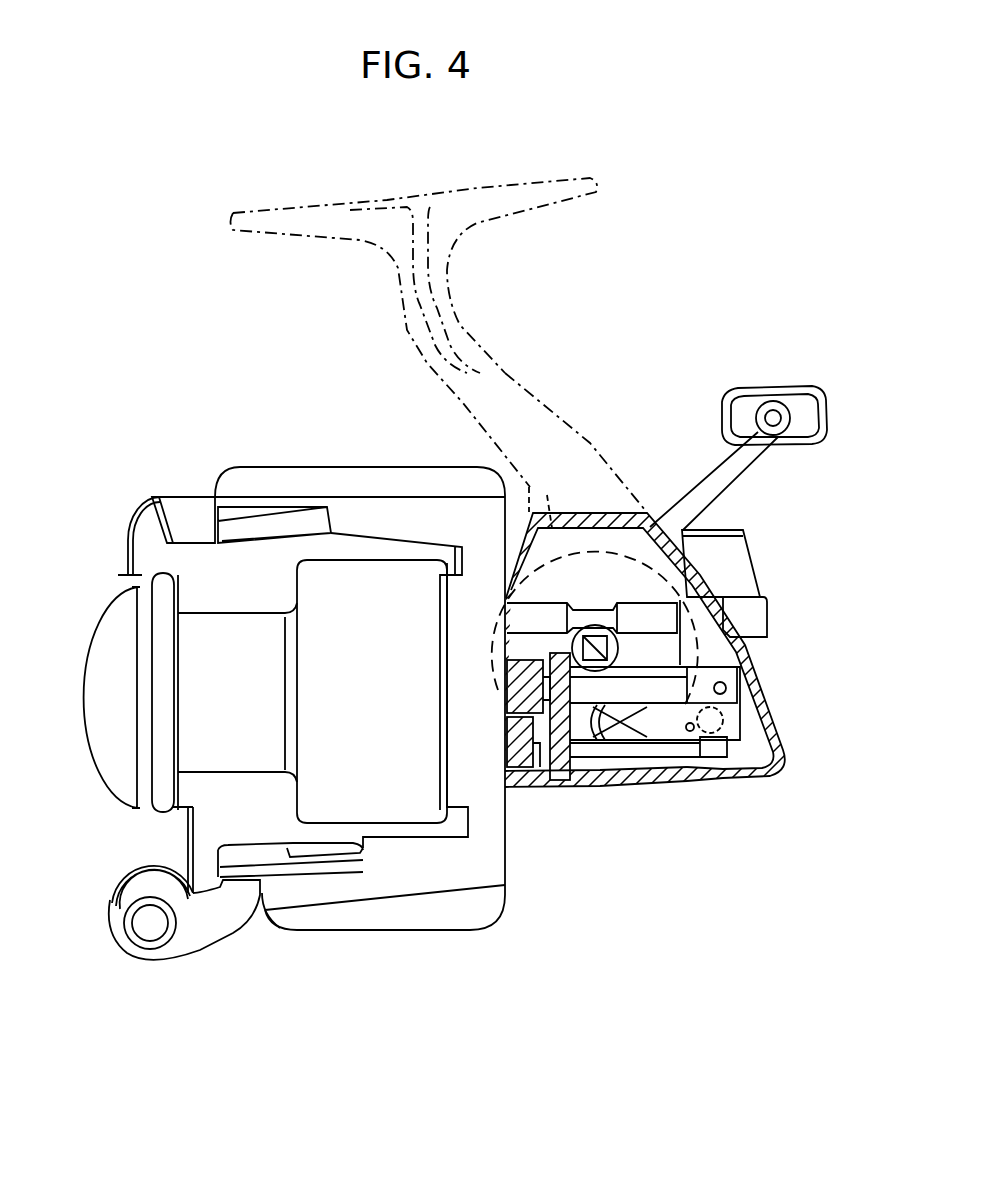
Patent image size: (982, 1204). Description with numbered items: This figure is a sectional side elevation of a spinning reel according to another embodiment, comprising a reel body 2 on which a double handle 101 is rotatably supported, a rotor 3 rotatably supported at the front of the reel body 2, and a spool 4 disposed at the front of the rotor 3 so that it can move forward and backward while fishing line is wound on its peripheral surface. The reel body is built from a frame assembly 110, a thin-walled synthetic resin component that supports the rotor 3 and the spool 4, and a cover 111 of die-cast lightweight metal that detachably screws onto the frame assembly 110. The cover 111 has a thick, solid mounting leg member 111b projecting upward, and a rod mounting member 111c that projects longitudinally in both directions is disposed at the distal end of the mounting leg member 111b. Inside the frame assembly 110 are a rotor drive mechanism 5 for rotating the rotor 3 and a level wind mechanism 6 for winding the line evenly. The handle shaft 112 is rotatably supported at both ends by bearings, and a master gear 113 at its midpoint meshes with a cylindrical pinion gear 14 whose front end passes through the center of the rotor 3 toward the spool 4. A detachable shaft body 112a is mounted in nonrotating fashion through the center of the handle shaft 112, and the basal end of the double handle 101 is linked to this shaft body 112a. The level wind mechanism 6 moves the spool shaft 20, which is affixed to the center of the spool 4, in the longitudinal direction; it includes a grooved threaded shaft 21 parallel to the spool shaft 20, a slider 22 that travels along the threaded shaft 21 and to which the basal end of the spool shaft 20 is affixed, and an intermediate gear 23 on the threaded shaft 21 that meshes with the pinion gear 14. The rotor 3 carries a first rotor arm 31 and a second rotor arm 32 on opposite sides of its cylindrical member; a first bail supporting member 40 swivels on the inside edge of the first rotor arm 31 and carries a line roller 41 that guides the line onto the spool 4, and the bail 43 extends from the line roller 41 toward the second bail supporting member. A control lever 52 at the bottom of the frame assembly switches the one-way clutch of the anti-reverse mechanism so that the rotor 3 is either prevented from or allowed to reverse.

The reel body 2 is at (658, 508).
The rotor 3 is at (373, 463).
The spool 4 is at (241, 610).
The rotor drive mechanism 5 is at (578, 575).
The level wind mechanism 6 is at (687, 773).
The pinion gear 14 is at (523, 667).
The spool shaft 20 is at (587, 690).
The threaded shaft 21 is at (603, 733).
The slider 22 is at (730, 677).
The intermediate gear 23 is at (522, 760).
The first rotor arm 31 is at (400, 917).
The second rotor arm 32 is at (322, 483).
The first bail supporting member 40 is at (113, 893).
The line roller 41 is at (190, 507).
The bail 43 is at (128, 575).
The control lever 52 is at (748, 553).
The double handle 101 is at (768, 462).
The frame assembly 110 is at (657, 787).
The cover 111 is at (590, 443).
The mounting leg member 111b is at (560, 417).
The rod mounting member 111c is at (537, 182).
The handle shaft 112 is at (605, 642).
The shaft body 112a is at (630, 604).
The master gear 113 is at (547, 497).